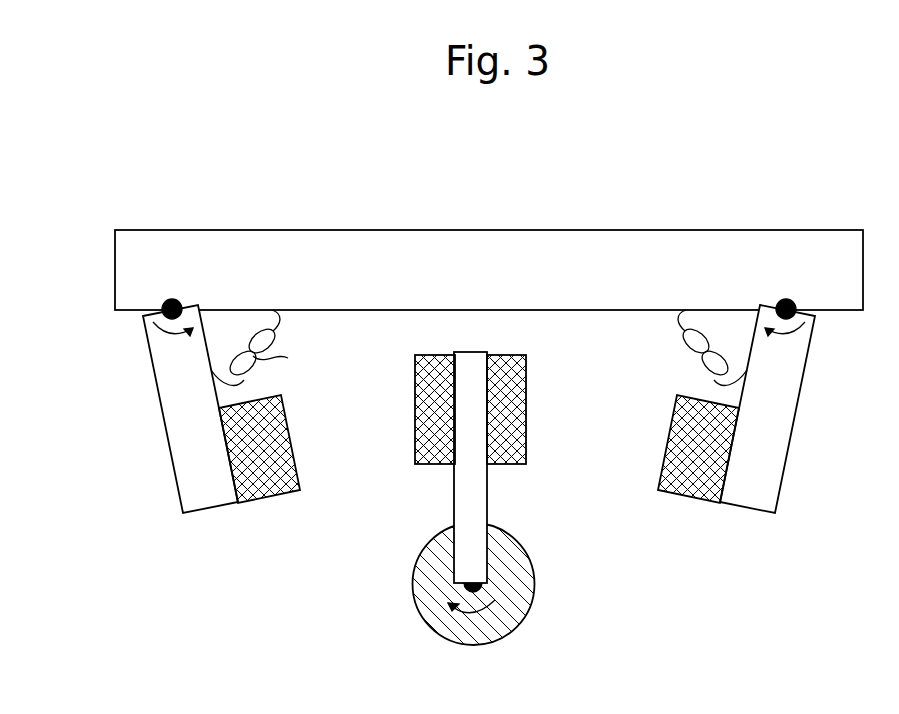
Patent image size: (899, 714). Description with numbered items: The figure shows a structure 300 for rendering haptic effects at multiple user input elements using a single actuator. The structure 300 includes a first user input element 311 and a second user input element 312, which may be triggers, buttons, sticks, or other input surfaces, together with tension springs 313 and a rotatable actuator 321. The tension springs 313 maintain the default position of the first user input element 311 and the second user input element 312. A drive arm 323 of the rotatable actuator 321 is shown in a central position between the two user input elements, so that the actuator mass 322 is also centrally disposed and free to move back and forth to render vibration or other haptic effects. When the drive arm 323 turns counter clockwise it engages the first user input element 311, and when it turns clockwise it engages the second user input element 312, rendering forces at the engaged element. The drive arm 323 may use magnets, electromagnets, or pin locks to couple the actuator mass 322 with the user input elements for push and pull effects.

The structure 300 is at (482, 187).
The first user input element 311 is at (173, 467).
The second user input element 312 is at (778, 497).
The tension springs 313 is at (303, 195).
The rotatable actuator 321 is at (515, 542).
The actuator mass 322 is at (523, 413).
The drive arm 323 is at (453, 493).